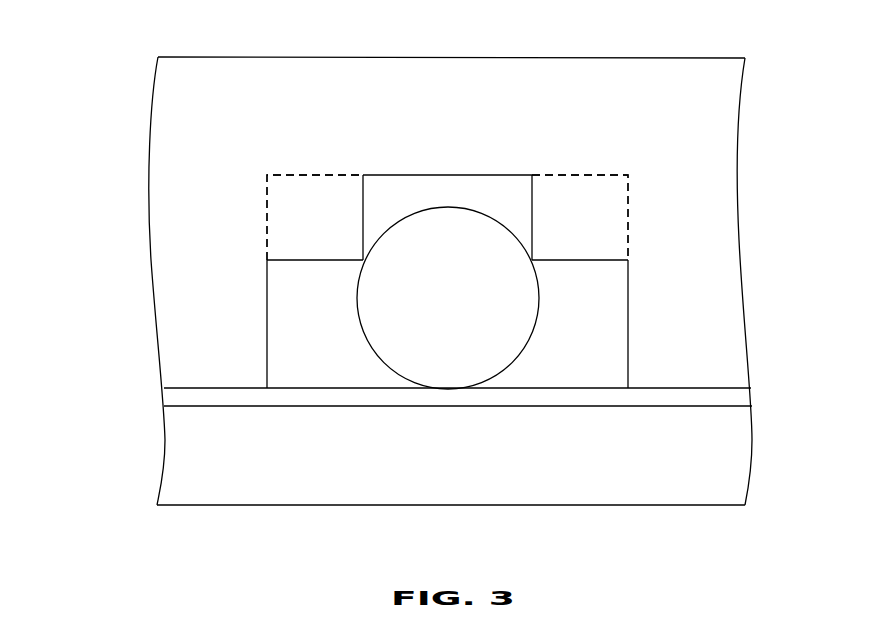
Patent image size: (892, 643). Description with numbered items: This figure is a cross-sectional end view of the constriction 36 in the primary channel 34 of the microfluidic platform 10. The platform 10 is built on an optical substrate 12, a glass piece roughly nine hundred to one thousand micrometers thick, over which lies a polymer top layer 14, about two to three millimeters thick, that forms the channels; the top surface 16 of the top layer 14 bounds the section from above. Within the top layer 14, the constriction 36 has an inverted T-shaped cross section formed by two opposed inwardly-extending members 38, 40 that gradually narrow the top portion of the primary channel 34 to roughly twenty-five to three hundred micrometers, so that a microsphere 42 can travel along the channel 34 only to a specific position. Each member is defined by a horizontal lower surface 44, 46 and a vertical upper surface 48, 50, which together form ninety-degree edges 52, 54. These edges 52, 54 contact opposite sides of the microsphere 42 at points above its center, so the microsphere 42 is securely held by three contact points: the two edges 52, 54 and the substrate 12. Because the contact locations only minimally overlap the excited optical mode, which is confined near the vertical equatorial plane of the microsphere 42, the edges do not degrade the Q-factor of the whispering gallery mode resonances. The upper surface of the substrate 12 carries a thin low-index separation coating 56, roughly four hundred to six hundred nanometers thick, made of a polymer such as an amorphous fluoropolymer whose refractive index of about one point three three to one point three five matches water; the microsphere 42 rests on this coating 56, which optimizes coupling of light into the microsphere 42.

The microfluidic platform 10 is at (78, 78).
The optical substrate 12 is at (461, 469).
The top layer 14 is at (461, 119).
The top surface 16 is at (738, 58).
The primary channel 34 is at (216, 235).
The constriction 36 is at (313, 143).
The inwardly-extending member 38 is at (305, 227).
The inwardly-extending member 40 is at (564, 227).
The microsphere 42 is at (503, 345).
The horizontal lower surface 44 is at (322, 262).
The horizontal lower surface 46 is at (573, 262).
The vertical upper surface 48 is at (366, 191).
The vertical upper surface 50 is at (530, 191).
The edge 52 is at (369, 266).
The edge 54 is at (526, 265).
The low-index separation coating 56 is at (737, 397).